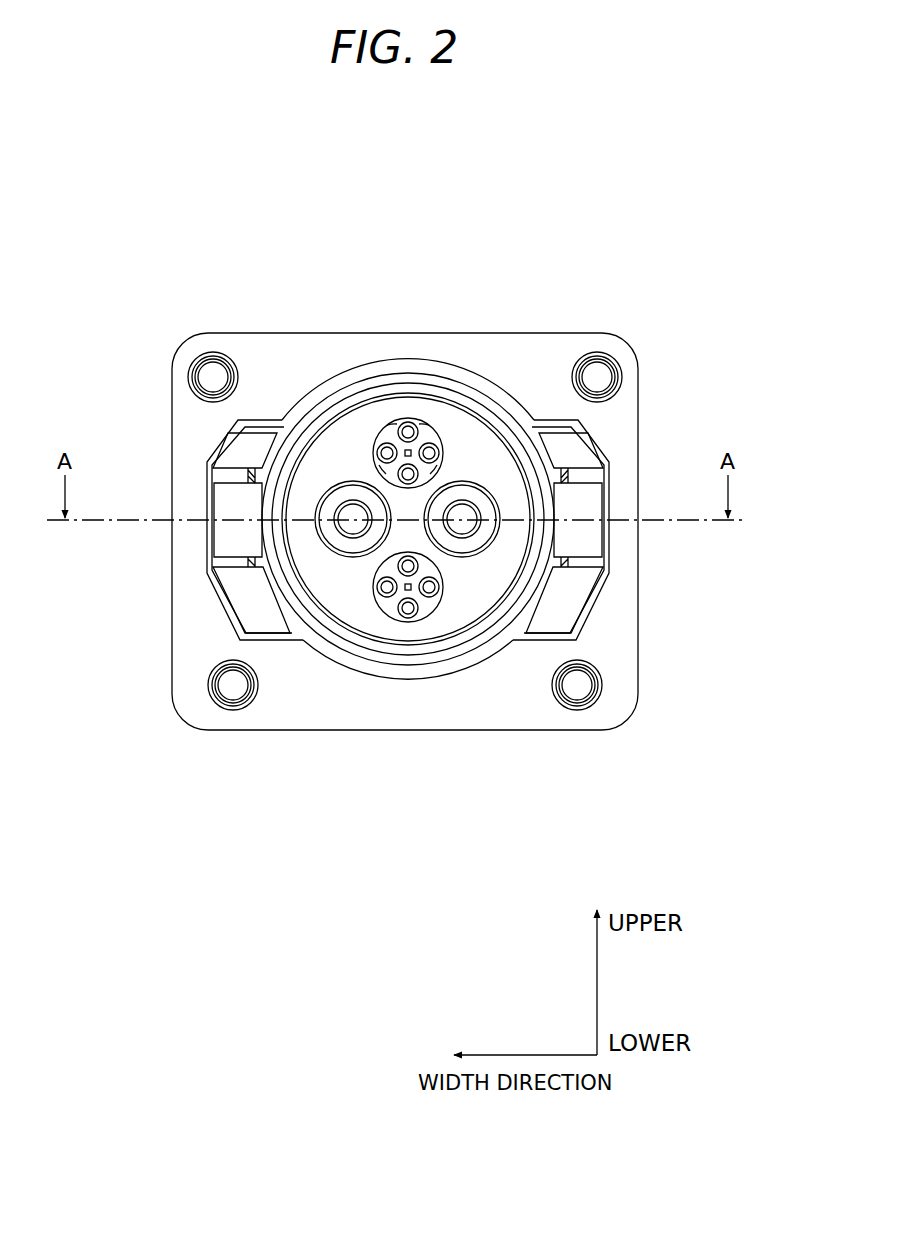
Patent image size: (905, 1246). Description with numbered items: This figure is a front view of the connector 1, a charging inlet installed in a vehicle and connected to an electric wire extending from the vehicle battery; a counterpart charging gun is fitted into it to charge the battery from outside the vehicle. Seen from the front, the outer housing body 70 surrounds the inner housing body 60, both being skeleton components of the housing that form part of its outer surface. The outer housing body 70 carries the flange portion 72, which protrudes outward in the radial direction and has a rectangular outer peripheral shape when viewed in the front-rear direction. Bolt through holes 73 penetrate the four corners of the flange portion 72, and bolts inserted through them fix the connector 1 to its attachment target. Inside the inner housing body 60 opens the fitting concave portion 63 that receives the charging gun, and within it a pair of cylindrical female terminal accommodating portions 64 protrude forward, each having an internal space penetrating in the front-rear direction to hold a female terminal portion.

The connector 1 is at (200, 303).
The inner housing body 60 is at (476, 649).
The fitting concave portion 63 is at (412, 625).
The female terminal accommodating portion 64 is at (333, 538).
The outer housing body 70 is at (641, 686).
The flange portion 72 is at (641, 383).
The bolt through hole 73 is at (595, 356).